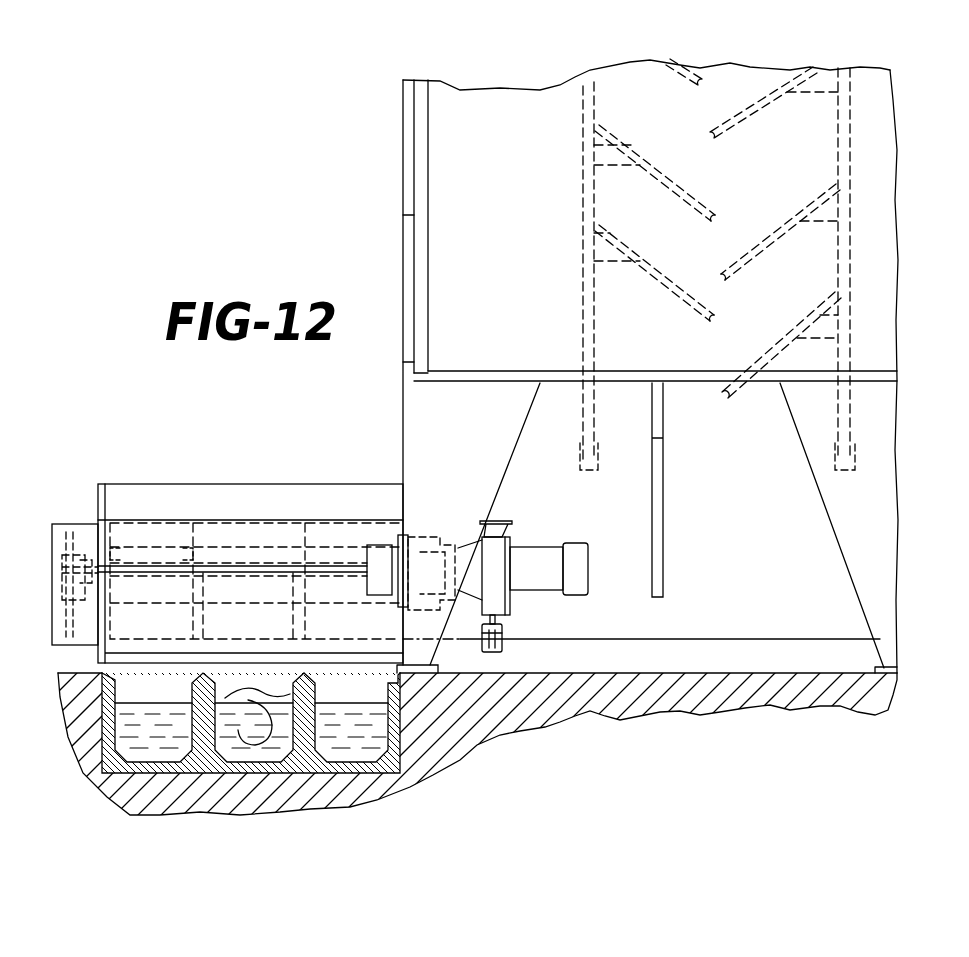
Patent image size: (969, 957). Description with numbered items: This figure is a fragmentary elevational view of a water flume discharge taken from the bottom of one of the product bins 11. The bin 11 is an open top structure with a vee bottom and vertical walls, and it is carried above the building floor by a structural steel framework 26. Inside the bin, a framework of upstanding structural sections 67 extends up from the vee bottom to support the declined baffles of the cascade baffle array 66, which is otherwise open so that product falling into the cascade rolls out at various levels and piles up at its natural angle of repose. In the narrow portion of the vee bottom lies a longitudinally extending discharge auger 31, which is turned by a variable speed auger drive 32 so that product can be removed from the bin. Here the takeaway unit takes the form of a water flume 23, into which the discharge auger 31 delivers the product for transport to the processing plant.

The product bin 11 is at (403, 165).
The water flume 23 is at (178, 494).
The structural steel framework 26 is at (403, 437).
The discharge auger 31 is at (755, 628).
The variable speed auger drive 32 is at (555, 556).
The cascade baffle array 66 is at (763, 78).
The upstanding structural sections 67 is at (590, 118).